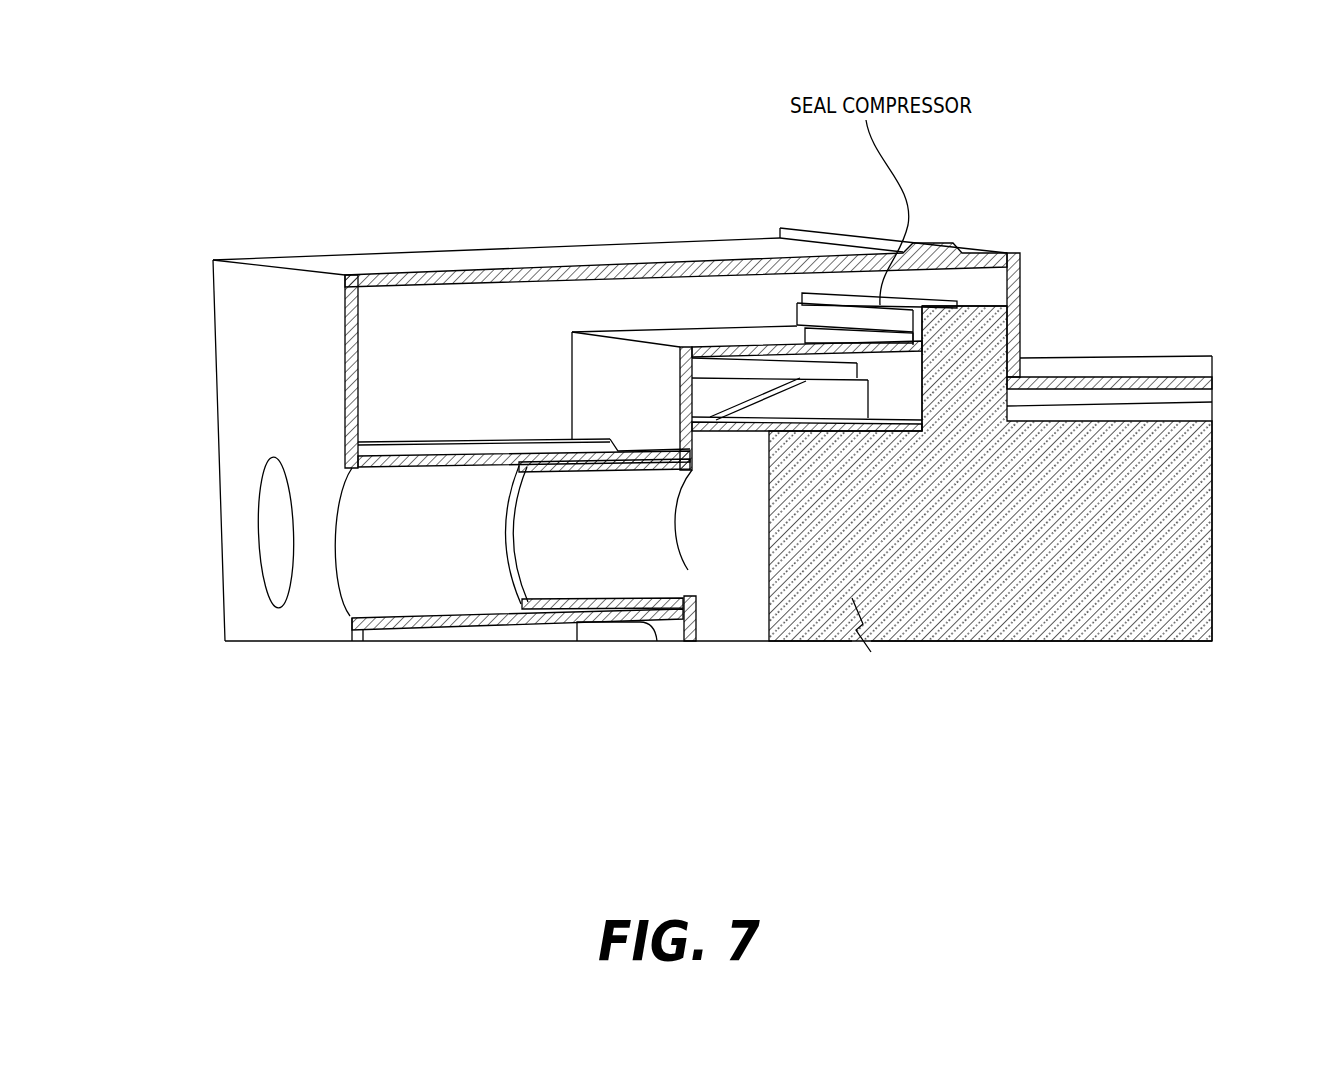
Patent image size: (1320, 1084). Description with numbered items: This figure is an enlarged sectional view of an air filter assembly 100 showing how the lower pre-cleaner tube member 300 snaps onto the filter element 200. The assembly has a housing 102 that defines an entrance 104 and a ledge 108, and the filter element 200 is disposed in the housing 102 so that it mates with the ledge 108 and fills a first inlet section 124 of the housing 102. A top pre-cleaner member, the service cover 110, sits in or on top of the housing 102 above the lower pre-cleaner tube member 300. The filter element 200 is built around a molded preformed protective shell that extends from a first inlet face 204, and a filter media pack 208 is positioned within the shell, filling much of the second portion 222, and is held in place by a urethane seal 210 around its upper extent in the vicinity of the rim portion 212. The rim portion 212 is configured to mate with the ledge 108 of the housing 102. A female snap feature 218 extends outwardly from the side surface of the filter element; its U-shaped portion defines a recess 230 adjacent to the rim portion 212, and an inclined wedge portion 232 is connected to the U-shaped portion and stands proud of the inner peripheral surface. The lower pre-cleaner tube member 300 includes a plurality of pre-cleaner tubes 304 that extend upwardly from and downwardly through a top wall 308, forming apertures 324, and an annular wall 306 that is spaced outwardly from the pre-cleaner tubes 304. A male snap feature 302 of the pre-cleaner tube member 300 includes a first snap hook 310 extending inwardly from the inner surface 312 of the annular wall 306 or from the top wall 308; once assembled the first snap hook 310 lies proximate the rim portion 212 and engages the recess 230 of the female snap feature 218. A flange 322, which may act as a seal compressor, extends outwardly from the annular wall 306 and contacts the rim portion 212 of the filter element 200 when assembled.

The air filter assembly 100 is at (658, 108).
The housing 102 is at (1191, 338).
The entrance 104 is at (261, 540).
The ledge 108 is at (1020, 356).
The service cover 110 is at (252, 308).
The first inlet section 124 is at (1009, 288).
The filter element 200 is at (713, 364).
The first inlet face 204 is at (326, 650).
The filter media pack 208 is at (1248, 506).
The urethane seal 210 is at (922, 363).
The rim portion 212 is at (956, 284).
The female snap feature 218 is at (850, 423).
The second portion 222 is at (1193, 613).
The recess 230 is at (809, 402).
The inclined wedge portion 232 is at (770, 393).
The lower pre-cleaner tube member 300 is at (575, 404).
The male snap feature 302 is at (742, 395).
The pre-cleaner tubes 304 is at (589, 580).
The annular wall 306 is at (697, 335).
The top wall 308 is at (663, 382).
The first snap hook 310 is at (847, 373).
The inner surface 312 is at (745, 360).
The flange 322 is at (922, 336).
The apertures 324 is at (688, 570).